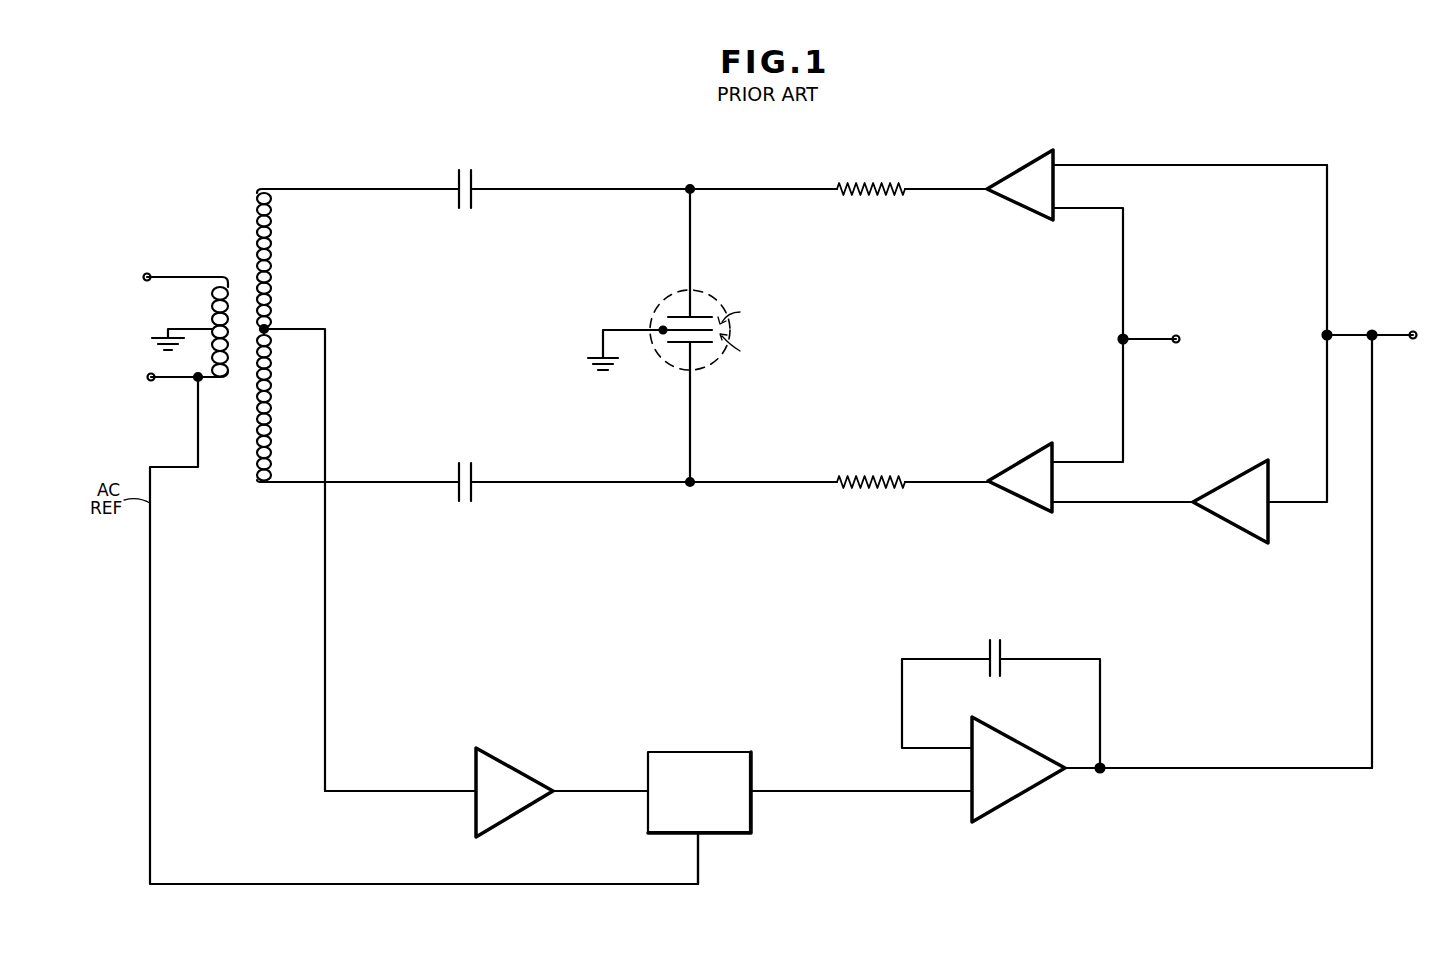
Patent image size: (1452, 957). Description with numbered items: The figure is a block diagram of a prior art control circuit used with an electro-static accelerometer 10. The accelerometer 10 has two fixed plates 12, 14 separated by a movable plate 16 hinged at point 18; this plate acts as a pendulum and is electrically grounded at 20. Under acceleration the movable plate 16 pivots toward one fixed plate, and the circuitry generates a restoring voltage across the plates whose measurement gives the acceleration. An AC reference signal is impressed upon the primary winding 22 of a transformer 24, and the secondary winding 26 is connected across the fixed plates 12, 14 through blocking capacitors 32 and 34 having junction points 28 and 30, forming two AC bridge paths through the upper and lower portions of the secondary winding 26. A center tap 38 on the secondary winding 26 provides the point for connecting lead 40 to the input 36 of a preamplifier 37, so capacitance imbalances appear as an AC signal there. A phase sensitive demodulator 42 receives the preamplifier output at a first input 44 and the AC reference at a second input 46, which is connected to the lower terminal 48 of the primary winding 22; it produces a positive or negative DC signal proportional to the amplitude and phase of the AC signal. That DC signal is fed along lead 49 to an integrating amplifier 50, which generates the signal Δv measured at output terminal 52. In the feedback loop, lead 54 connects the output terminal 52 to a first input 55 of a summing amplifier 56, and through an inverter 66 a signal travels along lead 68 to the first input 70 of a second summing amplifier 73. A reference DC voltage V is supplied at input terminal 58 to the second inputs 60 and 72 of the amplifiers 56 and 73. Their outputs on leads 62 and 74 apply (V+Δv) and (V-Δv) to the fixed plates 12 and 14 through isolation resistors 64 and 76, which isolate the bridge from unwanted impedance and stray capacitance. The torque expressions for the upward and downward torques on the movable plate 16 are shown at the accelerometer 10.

The electro-static accelerometer 10 is at (739, 320).
The fixed plate 12 is at (710, 316).
The fixed plate 14 is at (710, 345).
The movable plate 16 is at (680, 332).
The hinge point 18 is at (663, 328).
The electrical ground 20 is at (590, 356).
The primary winding 22 is at (212, 292).
The transformer 24 is at (225, 313).
The secondary winding 26 is at (262, 190).
The junction point 28 is at (690, 189).
The junction point 30 is at (690, 486).
The blocking capacitor 32 is at (467, 169).
The blocking capacitor 34 is at (461, 502).
The input 36 is at (457, 795).
The preamplifier 37 is at (521, 814).
The center tap 38 is at (266, 328).
The lead 40 is at (325, 428).
The demodulator 42 is at (753, 826).
The first input 44 is at (645, 790).
The second input 46 is at (700, 862).
The lower terminal 48 is at (200, 380).
The lead 49 is at (887, 796).
The integrating amplifier 50 is at (1119, 744).
The output terminal 52 is at (1413, 333).
The lead 54 is at (1330, 272).
The first input 55 is at (1058, 163).
The summing amplifier 56 is at (1010, 175).
The input terminal 58 is at (1158, 338).
The second input 60 is at (1070, 212).
The lead 62 is at (943, 183).
The isolation resistor 64 is at (867, 182).
The inverter 66 is at (1270, 540).
The lead 68 is at (1162, 505).
The first input 70 is at (1058, 502).
The second input 72 is at (1076, 460).
The summing amplifier 73 is at (1012, 494).
The lead 74 is at (959, 478).
The isolation resistor 76 is at (866, 475).